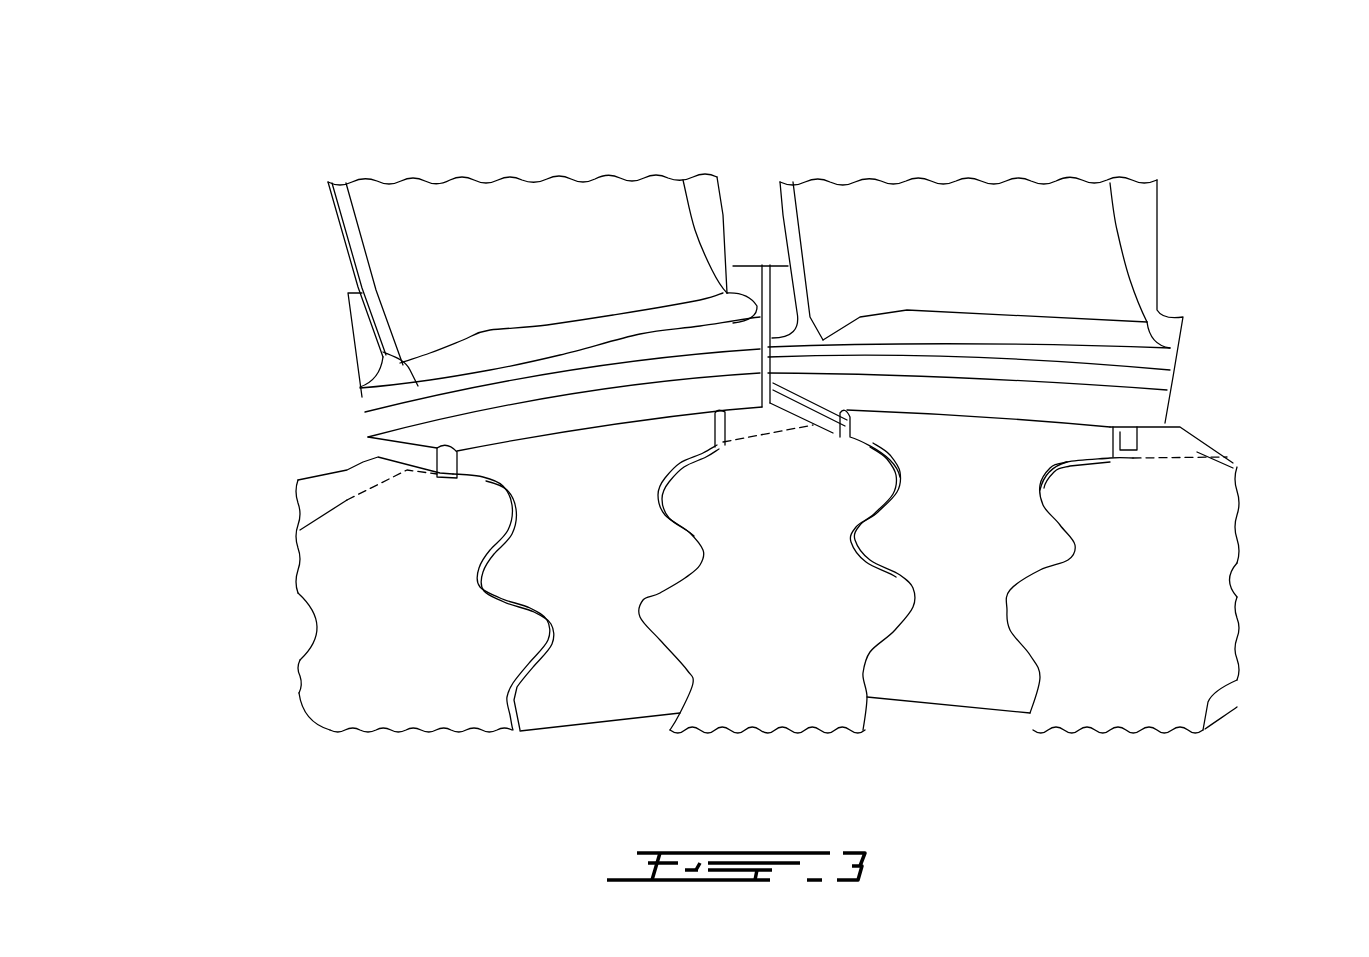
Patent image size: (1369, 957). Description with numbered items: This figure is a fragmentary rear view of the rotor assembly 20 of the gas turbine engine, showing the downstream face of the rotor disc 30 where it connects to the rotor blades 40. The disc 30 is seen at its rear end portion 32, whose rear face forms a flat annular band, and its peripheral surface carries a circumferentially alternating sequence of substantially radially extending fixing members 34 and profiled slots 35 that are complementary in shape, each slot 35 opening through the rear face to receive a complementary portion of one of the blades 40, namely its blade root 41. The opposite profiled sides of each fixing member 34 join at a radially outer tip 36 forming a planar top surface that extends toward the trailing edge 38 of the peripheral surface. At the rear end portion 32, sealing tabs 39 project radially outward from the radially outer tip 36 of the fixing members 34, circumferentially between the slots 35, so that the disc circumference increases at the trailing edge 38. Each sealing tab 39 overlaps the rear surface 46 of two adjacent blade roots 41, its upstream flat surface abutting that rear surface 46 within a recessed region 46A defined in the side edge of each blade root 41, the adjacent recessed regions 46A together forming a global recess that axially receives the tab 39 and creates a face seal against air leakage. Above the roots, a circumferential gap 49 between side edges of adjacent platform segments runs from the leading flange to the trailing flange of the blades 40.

The rotor assembly 20 is at (258, 180).
The rotor disc 30 is at (264, 567).
The rear end portion 32 is at (388, 723).
The fixing members 34 is at (408, 613).
The profiled slots 35 is at (897, 721).
The radially outer tip 36 is at (1232, 446).
The trailing edge 38 is at (1233, 465).
The sealing tabs 39 is at (757, 427).
The rotor blades 40 is at (333, 268).
The blade root 41 is at (588, 539).
The rear surface 46 is at (1033, 459).
The recessed region 46A is at (832, 407).
The circumferential gap 49 is at (765, 252).